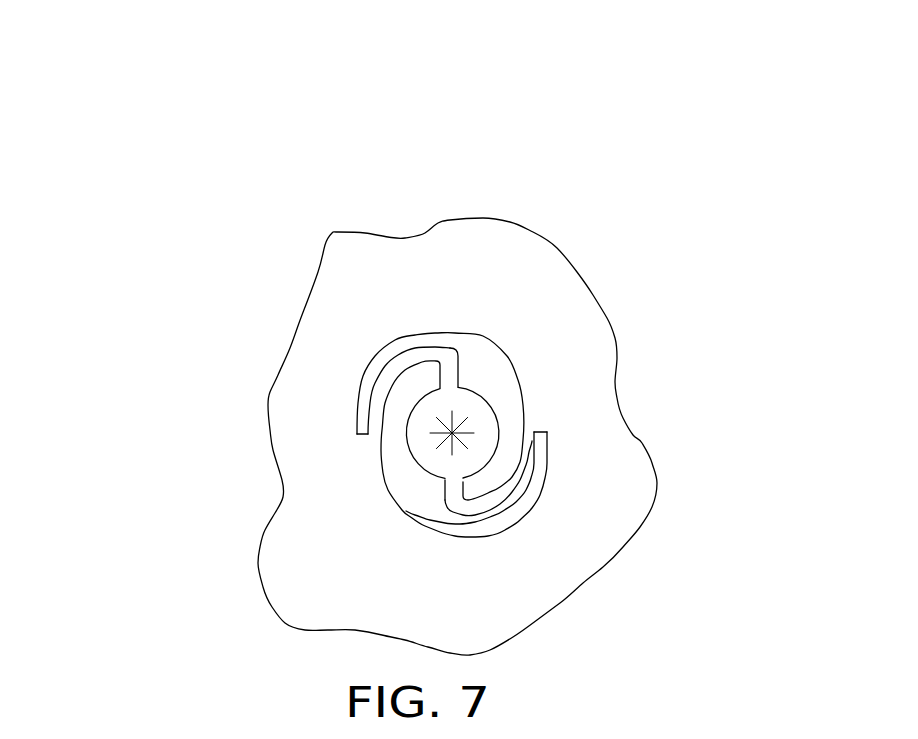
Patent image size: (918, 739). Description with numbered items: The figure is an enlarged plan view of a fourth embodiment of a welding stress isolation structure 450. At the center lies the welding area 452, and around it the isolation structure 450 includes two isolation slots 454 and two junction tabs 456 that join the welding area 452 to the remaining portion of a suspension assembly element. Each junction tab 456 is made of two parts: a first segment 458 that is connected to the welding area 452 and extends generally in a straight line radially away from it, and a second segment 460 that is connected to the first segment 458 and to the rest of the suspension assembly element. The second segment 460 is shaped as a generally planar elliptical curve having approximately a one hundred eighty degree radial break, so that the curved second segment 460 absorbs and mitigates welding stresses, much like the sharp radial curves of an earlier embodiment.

The isolation structure 450 is at (568, 340).
The welding area 452 is at (420, 436).
The isolation slot 454 is at (505, 388).
The junction tab 456 is at (426, 350).
The first segment 458 is at (455, 368).
The second segment 460 is at (390, 385).